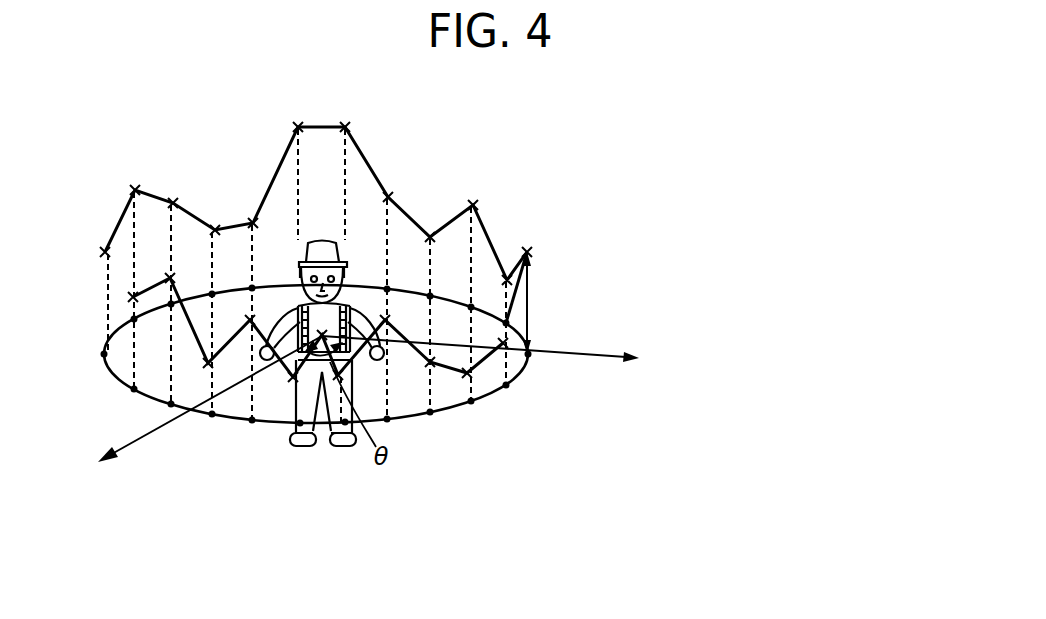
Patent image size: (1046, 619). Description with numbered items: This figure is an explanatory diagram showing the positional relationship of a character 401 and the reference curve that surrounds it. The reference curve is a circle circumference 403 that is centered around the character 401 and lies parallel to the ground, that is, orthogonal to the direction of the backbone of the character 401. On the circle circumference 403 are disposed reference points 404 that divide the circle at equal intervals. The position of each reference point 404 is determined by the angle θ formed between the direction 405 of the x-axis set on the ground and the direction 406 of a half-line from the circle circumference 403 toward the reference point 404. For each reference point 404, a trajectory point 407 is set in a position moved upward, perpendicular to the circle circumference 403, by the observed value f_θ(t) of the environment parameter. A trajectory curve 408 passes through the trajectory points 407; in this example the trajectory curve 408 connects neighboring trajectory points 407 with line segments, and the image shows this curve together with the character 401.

The character 401 is at (303, 446).
The circle circumference 403 is at (408, 423).
The reference point 404 is at (529, 357).
The direction of the x-axis 405 is at (136, 443).
The direction of a half-line from the circle circumference to the reference point 406 is at (611, 354).
The trajectory point 407 is at (530, 252).
The trajectory curve 408 is at (365, 153).